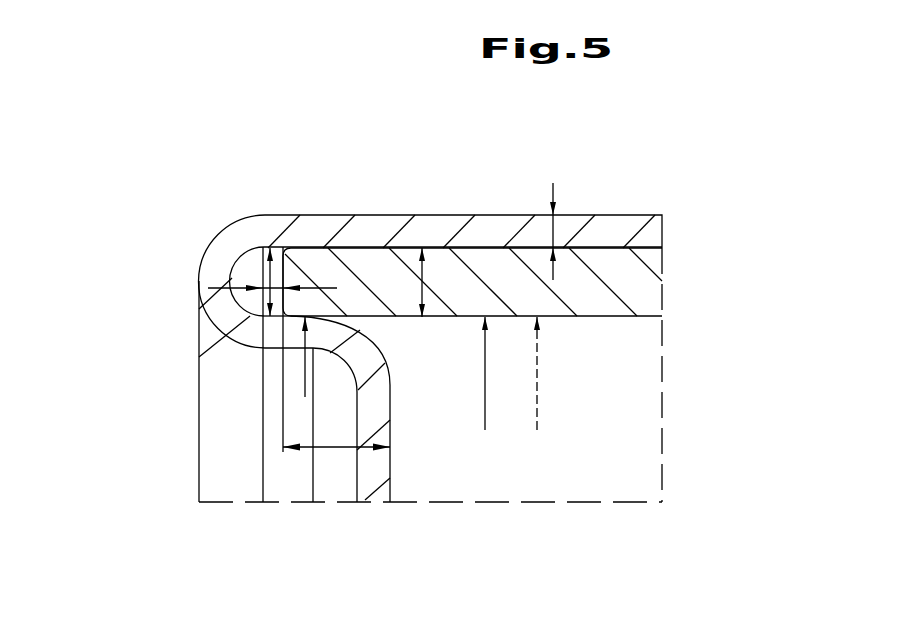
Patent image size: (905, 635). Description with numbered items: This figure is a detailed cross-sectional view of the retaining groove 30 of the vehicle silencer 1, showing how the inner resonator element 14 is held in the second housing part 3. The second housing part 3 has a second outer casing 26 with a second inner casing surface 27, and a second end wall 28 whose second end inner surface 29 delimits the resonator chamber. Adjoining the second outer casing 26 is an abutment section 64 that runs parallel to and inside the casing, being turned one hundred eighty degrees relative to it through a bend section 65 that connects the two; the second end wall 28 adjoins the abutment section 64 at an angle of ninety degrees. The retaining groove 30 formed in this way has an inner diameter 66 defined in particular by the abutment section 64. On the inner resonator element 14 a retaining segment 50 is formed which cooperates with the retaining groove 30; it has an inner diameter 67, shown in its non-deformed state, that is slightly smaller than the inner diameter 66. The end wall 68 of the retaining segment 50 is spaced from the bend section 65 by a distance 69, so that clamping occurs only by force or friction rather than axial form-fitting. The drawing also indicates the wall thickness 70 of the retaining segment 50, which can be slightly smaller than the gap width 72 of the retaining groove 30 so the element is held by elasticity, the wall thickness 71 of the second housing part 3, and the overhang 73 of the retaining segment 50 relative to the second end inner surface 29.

The vehicle silencer 1 is at (170, 152).
The second housing part 3 is at (653, 232).
The inner resonator element 14 is at (641, 288).
The second outer casing 26 is at (305, 225).
The second inner casing surface 27 is at (362, 259).
The second end wall 28 is at (368, 476).
The second end inner surface 29 is at (392, 422).
The retaining groove 30 is at (270, 231).
The retaining segment 50 is at (311, 258).
The abutment section 64 is at (302, 330).
The bend section 65 is at (208, 280).
The inner diameter of the retaining groove 66 is at (301, 370).
The inner diameter of the retaining segment 67 is at (492, 403).
The end wall of the retaining segment 68 is at (269, 246).
The distance 69 is at (240, 278).
The wall thickness of the retaining segment 70 is at (425, 272).
The wall thickness of the second housing part 71 is at (553, 233).
The gap width 72 is at (258, 268).
The overhang 73 is at (342, 435).